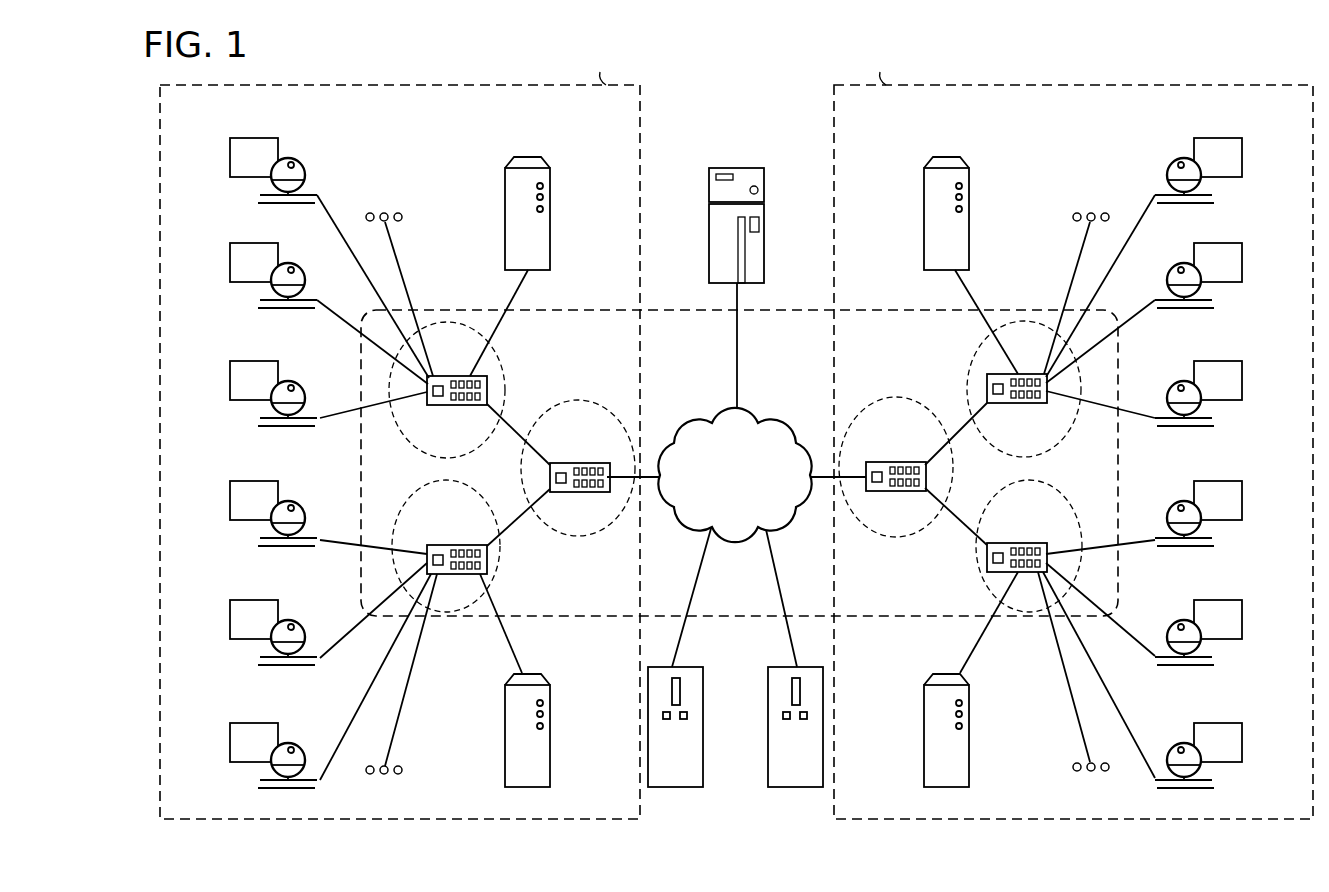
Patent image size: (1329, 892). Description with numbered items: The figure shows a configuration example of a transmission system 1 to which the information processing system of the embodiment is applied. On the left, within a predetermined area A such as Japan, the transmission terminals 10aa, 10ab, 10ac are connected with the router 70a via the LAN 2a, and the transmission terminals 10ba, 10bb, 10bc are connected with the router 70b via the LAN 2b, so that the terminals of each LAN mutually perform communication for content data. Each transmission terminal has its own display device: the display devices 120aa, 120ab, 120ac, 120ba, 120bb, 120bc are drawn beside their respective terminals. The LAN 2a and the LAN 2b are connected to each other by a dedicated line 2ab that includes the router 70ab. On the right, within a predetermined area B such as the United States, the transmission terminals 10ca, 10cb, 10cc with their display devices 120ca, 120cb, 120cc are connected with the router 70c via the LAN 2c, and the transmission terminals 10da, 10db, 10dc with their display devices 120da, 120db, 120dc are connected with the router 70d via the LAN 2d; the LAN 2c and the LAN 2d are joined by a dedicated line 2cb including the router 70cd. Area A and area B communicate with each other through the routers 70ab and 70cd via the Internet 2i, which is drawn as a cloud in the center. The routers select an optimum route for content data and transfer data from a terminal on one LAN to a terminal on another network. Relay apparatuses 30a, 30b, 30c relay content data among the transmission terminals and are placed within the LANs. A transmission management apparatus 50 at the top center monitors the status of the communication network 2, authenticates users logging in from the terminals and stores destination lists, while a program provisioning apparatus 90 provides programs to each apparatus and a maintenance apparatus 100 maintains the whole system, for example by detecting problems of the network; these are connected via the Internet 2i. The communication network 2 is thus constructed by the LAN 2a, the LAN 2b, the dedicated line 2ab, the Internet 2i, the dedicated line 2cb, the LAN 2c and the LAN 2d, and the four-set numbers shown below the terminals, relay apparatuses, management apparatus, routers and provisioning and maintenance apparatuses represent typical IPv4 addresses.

The transmission system 1 is at (779, 90).
The communication network 2 is at (655, 310).
The LAN 2a is at (503, 355).
The LAN 2b is at (497, 578).
The dedicated line 2ab is at (588, 400).
The LAN 2c is at (969, 355).
The LAN 2d is at (976, 575).
The dedicated line 2cb is at (880, 397).
The Internet 2i is at (735, 545).
The transmission terminal 10ac is at (297, 158).
The transmission terminal 10ab is at (297, 263).
The transmission terminal 10aa is at (297, 381).
The transmission terminal 10ba is at (297, 501).
The transmission terminal 10bb is at (297, 620).
The transmission terminal 10bc is at (297, 743).
The transmission terminal 10cc is at (1178, 158).
The transmission terminal 10cb is at (1178, 263).
The transmission terminal 10ca is at (1178, 381).
The transmission terminal 10da is at (1178, 501).
The transmission terminal 10db is at (1178, 620).
The transmission terminal 10dc is at (1178, 743).
The display device 120ac is at (232, 138).
The display device 120ab is at (232, 243).
The display device 120aa is at (232, 361).
The display device 120ba is at (232, 481).
The display device 120bb is at (232, 600).
The display device 120bc is at (232, 723).
The display device 120cc is at (1258, 122).
The display device 120cb is at (1258, 227).
The display device 120ca is at (1258, 345).
The display device 120da is at (1258, 465).
The display device 120db is at (1258, 584).
The display device 120dc is at (1258, 707).
The relay apparatus 30a is at (528, 157).
The relay apparatus 30b is at (526, 673).
The relay apparatus 30c is at (946, 157).
The transmission management apparatus 50 is at (738, 168).
The router 70a is at (441, 376).
The router 70b is at (487, 557).
The router 70ab is at (577, 463).
The router 70c is at (1029, 374).
The router 70d is at (987, 556).
The router 70cd is at (896, 462).
The program provisioning apparatus 90 is at (664, 667).
The maintenance apparatus 100 is at (809, 667).